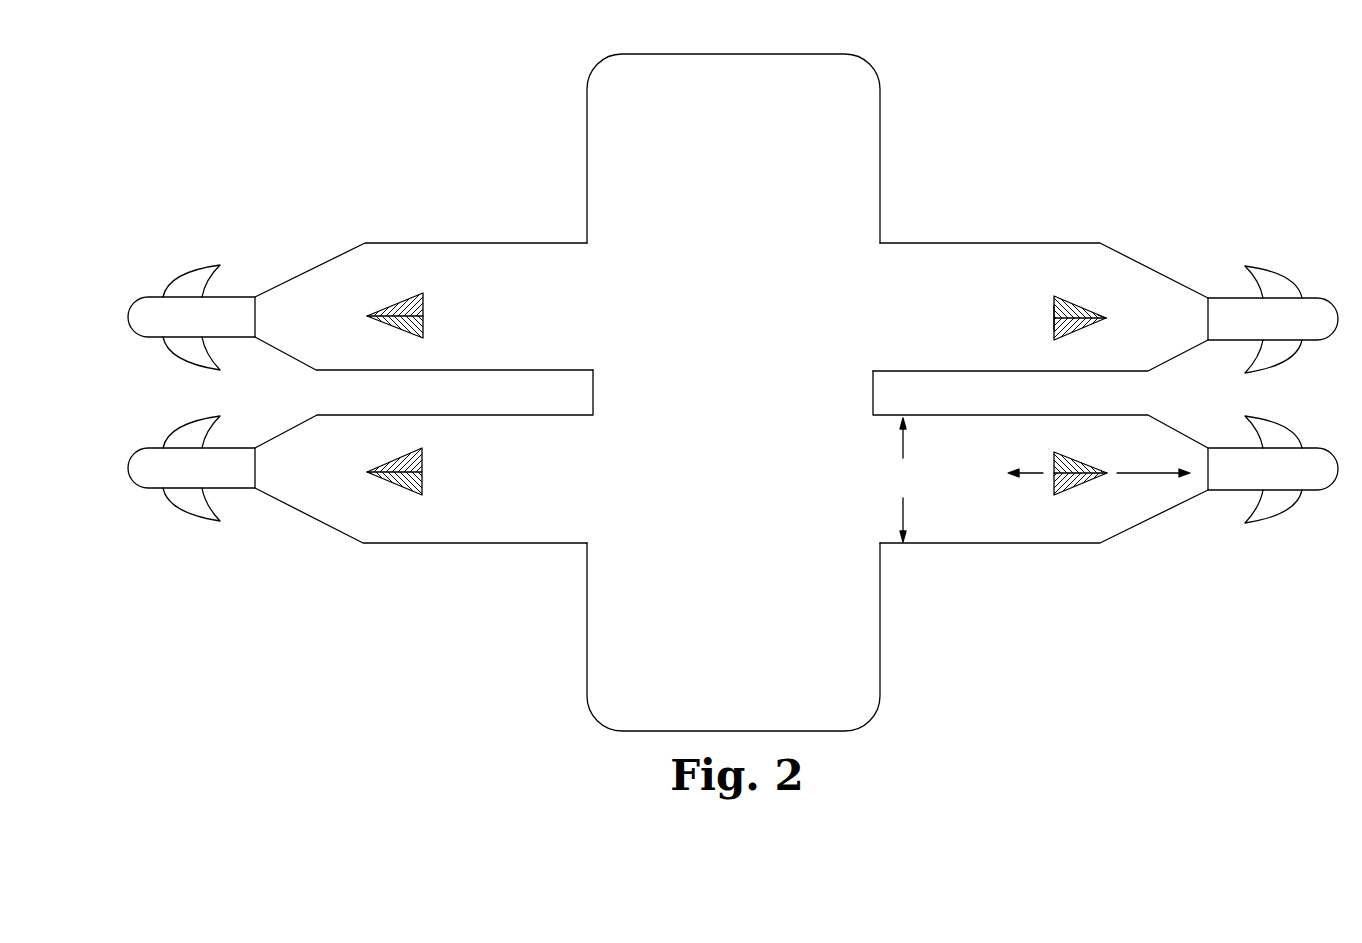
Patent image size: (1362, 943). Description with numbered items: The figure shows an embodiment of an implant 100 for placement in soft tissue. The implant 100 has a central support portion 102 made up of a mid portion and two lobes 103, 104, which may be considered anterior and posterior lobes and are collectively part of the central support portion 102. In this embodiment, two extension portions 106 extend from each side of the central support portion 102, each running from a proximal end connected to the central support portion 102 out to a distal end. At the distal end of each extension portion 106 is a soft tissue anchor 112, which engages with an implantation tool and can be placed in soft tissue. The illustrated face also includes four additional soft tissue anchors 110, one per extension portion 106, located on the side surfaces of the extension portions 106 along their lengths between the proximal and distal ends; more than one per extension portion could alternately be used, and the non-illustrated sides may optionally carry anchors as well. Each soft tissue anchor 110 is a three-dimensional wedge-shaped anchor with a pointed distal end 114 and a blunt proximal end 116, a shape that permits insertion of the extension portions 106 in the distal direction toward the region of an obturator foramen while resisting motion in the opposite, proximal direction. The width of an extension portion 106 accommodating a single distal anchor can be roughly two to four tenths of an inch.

The implant 100 is at (405, 630).
The central support portion 102 is at (542, 198).
The lobe 103 is at (711, 130).
The lobe 104 is at (704, 643).
The extension portion 106 is at (473, 323).
The soft tissue anchor 110 is at (402, 302).
The soft tissue anchor 112 is at (158, 303).
The pointed distal end 114 is at (1107, 318).
The blunt proximal end 116 is at (1040, 314).